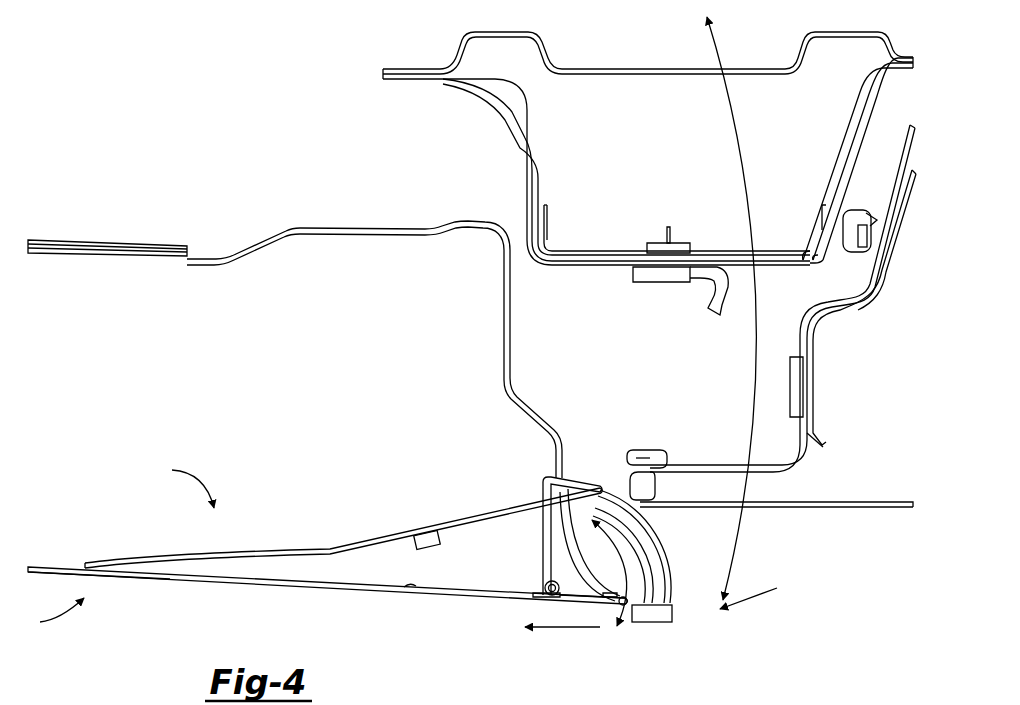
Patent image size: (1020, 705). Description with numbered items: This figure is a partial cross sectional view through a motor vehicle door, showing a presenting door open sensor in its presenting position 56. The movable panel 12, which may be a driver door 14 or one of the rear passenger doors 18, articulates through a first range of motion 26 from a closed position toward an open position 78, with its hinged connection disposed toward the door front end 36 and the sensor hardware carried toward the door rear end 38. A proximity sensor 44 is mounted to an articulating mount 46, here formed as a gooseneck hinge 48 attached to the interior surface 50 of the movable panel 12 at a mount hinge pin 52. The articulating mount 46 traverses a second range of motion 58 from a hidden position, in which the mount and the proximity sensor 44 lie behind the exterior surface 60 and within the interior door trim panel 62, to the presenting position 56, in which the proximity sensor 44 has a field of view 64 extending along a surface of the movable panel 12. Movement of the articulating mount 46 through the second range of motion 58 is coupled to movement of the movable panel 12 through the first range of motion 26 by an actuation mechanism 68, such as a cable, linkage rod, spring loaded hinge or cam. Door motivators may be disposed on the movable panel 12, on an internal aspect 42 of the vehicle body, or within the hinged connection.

The movable panel 12 is at (47, 615).
The driver door 14 is at (358, 593).
The rear passenger doors 18 is at (869, 508).
The first range of motion 26 is at (740, 134).
The door front end 36 is at (836, 508).
The door rear end 38 is at (500, 601).
The internal aspect 42 is at (808, 219).
The proximity sensor 44 is at (660, 624).
The articulating mount 46 is at (668, 557).
The gooseneck hinge 48 is at (590, 478).
The interior surface 50 is at (412, 588).
The mount hinge pin 52 is at (548, 579).
The presenting position 56 is at (761, 590).
The second range of motion 58 is at (622, 636).
The exterior surface 60 is at (167, 582).
The interior door trim panel 62 is at (340, 229).
The field of view 64 is at (580, 629).
The actuation mechanism 68 is at (288, 553).
The open position 78 is at (180, 484).